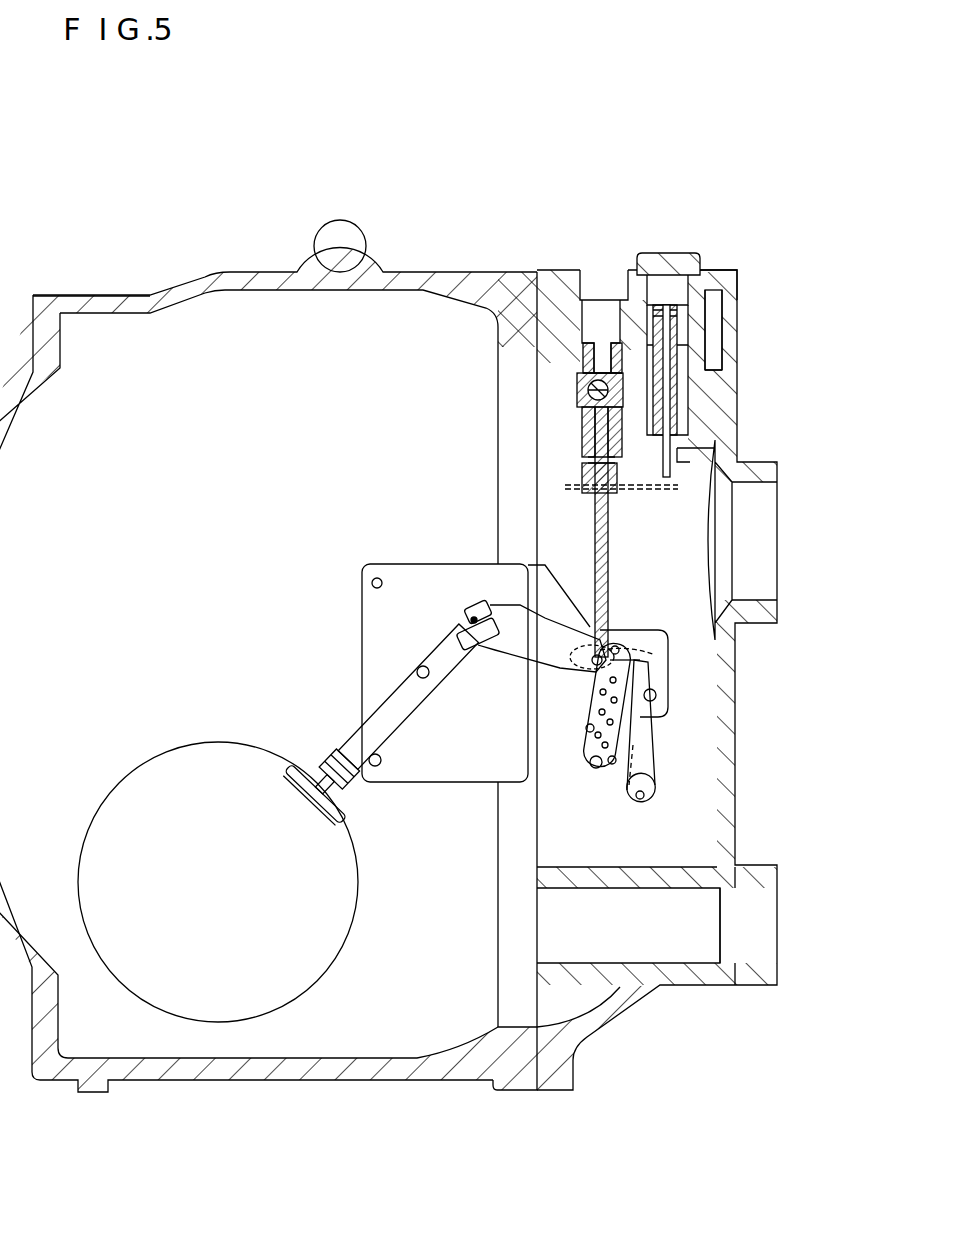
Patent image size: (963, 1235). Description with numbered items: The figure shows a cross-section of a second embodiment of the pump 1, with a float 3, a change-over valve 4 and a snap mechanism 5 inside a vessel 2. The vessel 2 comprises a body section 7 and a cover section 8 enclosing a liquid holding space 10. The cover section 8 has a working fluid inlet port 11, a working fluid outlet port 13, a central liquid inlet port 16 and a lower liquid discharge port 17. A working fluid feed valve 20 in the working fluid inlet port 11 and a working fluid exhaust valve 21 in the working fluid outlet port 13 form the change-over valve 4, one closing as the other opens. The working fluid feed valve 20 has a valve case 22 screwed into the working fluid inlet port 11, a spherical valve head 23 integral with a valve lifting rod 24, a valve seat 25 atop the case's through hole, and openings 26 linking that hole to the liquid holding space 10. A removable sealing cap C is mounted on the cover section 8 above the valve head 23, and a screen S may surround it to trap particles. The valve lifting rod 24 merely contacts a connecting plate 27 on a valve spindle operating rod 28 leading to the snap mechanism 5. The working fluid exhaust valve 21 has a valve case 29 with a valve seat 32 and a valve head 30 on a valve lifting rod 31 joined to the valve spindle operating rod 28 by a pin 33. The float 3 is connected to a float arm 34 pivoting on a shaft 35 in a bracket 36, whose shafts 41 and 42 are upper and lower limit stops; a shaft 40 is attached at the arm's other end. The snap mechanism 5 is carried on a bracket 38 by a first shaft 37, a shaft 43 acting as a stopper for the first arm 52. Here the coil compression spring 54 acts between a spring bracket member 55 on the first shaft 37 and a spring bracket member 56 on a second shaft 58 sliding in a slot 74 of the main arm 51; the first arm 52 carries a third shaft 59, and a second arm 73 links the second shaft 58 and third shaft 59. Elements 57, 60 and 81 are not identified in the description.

The pump 1 is at (462, 230).
The vessel 2 is at (218, 250).
The float 3 is at (125, 770).
The change-over valve 4 is at (678, 470).
The snap mechanism 5 is at (652, 637).
The body section 7 is at (112, 300).
The cover section 8 is at (727, 282).
The liquid holding space 10 is at (176, 408).
The working fluid inlet port 11 is at (726, 300).
The working fluid outlet port 13 is at (598, 282).
The liquid inlet port 16 is at (758, 550).
The liquid discharge port 17 is at (758, 929).
The working fluid feed valve 20 is at (683, 408).
The working fluid exhaust valve 21 is at (558, 396).
The valve case 22 is at (690, 353).
The valve head 23 is at (660, 290).
The valve lifting rod 24 is at (680, 438).
The valve seat 25 is at (700, 320).
The openings 26 is at (690, 380).
The connecting plate 27 is at (586, 486).
The valve spindle operating rod 28 is at (607, 538).
The valve case 29 is at (590, 413).
The valve head 30 is at (592, 378).
The valve lifting rod 31 is at (598, 436).
The valve seat 32 is at (598, 362).
The pin 33 is at (600, 462).
The float arm 34 is at (400, 690).
The shaft 35 is at (418, 672).
The bracket 36 is at (380, 618).
The first shaft 37 is at (645, 667).
The bracket 38 is at (657, 656).
The shaft 40 is at (470, 612).
The shaft 41 is at (372, 583).
The shaft 42 is at (380, 770).
The shaft 43 is at (657, 698).
The main arm 51 is at (482, 648).
The first arm 52 is at (645, 750).
The coil compression spring 54 is at (600, 715).
The spring bracket member 55 is at (620, 645).
The spring bracket member 56 is at (596, 768).
The tab 57 is at (480, 605).
The second shaft 58 is at (612, 768).
The third shaft 59 is at (643, 805).
The cover 60 is at (592, 632).
The second arm 73 is at (642, 792).
The long hole or slot 74 is at (590, 728).
The pivot 81 is at (612, 648).
The sealing cap C is at (653, 258).
The screen S is at (671, 262).